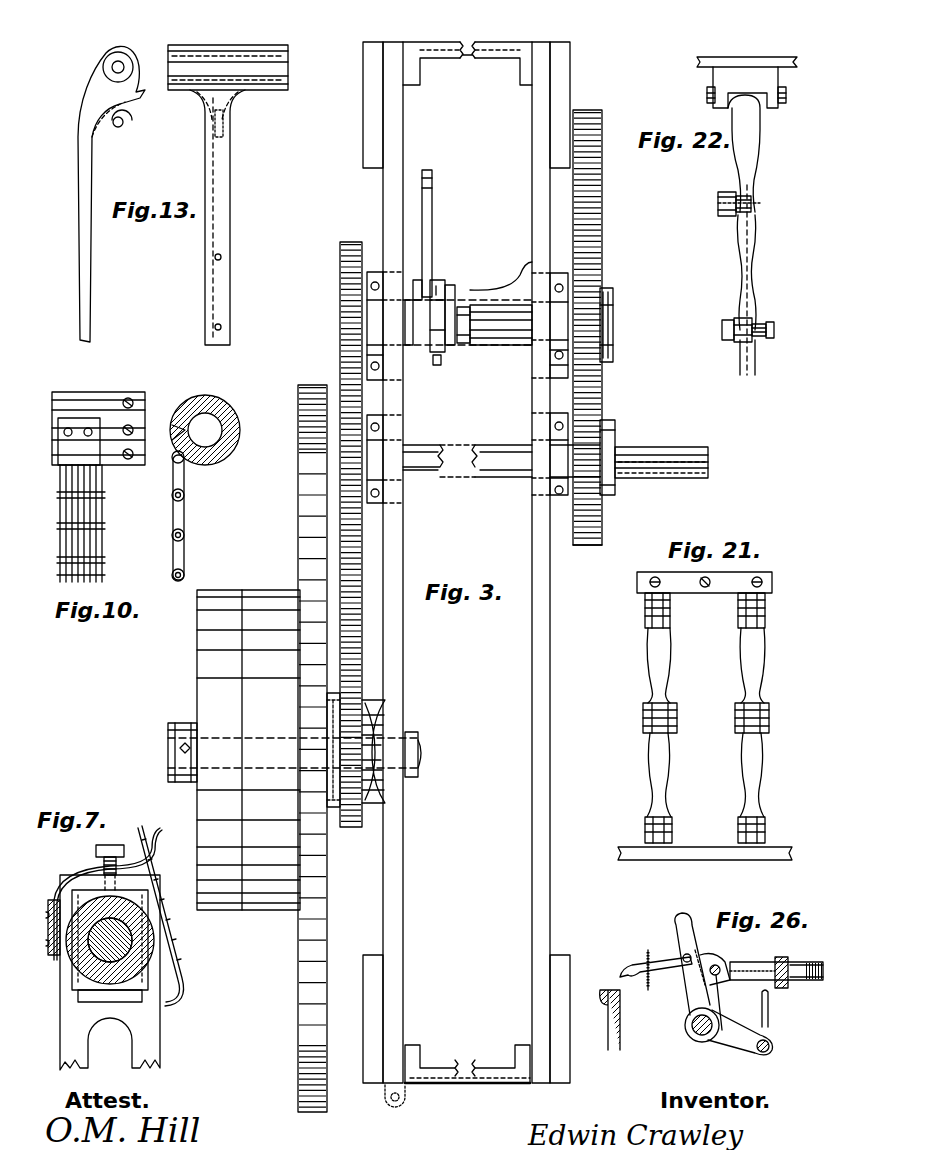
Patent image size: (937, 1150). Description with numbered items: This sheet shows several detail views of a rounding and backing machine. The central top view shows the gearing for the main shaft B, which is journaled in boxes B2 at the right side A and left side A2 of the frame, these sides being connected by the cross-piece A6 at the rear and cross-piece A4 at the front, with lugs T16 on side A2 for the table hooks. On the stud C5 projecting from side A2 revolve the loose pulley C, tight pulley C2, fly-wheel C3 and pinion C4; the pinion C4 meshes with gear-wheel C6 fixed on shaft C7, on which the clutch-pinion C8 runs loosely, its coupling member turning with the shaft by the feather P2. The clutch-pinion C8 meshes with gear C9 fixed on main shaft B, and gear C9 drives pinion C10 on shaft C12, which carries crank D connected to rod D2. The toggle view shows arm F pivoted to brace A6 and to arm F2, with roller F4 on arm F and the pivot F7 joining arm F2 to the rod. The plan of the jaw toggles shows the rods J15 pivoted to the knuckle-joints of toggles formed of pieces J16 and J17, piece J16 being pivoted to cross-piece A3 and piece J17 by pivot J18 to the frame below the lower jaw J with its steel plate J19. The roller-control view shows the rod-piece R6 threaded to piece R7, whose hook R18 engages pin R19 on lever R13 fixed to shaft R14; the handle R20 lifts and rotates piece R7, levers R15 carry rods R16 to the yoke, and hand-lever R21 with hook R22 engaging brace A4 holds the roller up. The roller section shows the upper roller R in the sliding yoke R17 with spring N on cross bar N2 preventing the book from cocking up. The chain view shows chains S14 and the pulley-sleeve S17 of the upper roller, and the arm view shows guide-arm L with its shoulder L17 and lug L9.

In FIG. 13, the guide-arm L is at (88, 168).
In FIG. 13, the shoulder L17 is at (138, 94).
In FIG. 13, the lug L9 is at (121, 126).
In FIG. 10, the pulley-sleeve S17 is at (60, 410).
In FIG. 10, the chains S14 is at (66, 508).
In FIG. 7, the upper roller R is at (110, 941).
In FIG. 7, the sliding yoke R17 is at (110, 957).
In FIG. 7, the spring N is at (150, 855).
In FIG. 7, the cross bar N2 is at (52, 957).
In FIG. 3, the right side of the frame A is at (545, 637).
In FIG. 3, the left side of the frame A2 is at (405, 655).
In FIG. 3, the cross-piece A6 is at (492, 55).
In FIG. 22, the cross-piece A6 is at (706, 62).
In FIG. 3, the cross-piece A4 is at (484, 1068).
In FIG. 26, the cross-piece A4 is at (621, 1034).
In FIG. 21, the cross-piece A3 is at (712, 855).
In FIG. 3, the lugs T16 is at (410, 1097).
In FIG. 3, the gear C9 is at (595, 205).
In FIG. 3, the pinion C10 is at (595, 365).
In FIG. 3, the clutch-pinion C8 is at (600, 530).
In FIG. 3, the gear-wheel C6 is at (342, 280).
In FIG. 3, the fly-wheel C3 is at (312, 748).
In FIG. 3, the loose pulley C is at (228, 708).
In FIG. 3, the tight pulley C2 is at (278, 708).
In FIG. 3, the stud C5 is at (166, 750).
In FIG. 3, the pinion C4 is at (352, 810).
In FIG. 3, the shaft C7 is at (436, 462).
In FIG. 3, the feather P2 is at (670, 465).
In FIG. 3, the boxes B2 is at (556, 278).
In FIG. 3, the main shaft B is at (495, 345).
In FIG. 3, the shaft C12 is at (482, 325).
In FIG. 3, the crank D is at (440, 282).
In FIG. 3, the rod D2 is at (432, 208).
In FIG. 22, the arm F is at (744, 235).
In FIG. 22, the roller F4 is at (717, 208).
In FIG. 22, the arm F2 is at (738, 319).
In FIG. 22, the pivot F7 is at (775, 326).
In FIG. 21, the lower jaw J is at (704, 582).
In FIG. 21, the steel plate J19 is at (775, 586).
In FIG. 21, the pivot J18 is at (645, 612).
In FIG. 21, the toggle piece J17 is at (653, 660).
In FIG. 21, the rods J15 is at (652, 725).
In FIG. 21, the toggle piece J16 is at (663, 775).
In FIG. 26, the hand-lever R21 is at (676, 935).
In FIG. 26, the shaft R14 is at (693, 1035).
In FIG. 26, the levers R15 is at (740, 1032).
In FIG. 26, the lever R13 is at (716, 997).
In FIG. 26, the rod R16 is at (770, 1004).
In FIG. 26, the forward piece of the compound pull-rod R7 is at (742, 962).
In FIG. 26, the rod-piece R6 is at (812, 962).
In FIG. 26, the hook R18 is at (705, 952).
In FIG. 26, the pin R19 is at (717, 963).
In FIG. 26, the hook R22 is at (641, 968).
In FIG. 26, the handle R20 is at (646, 960).